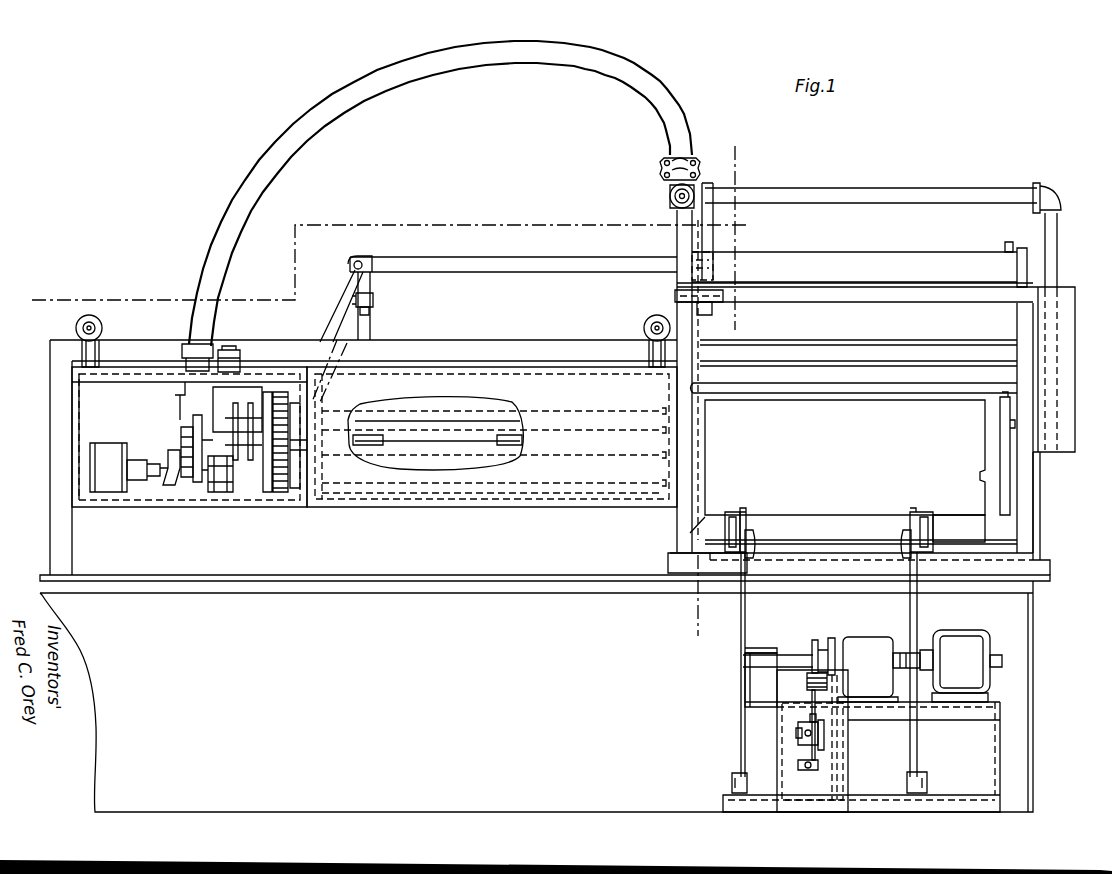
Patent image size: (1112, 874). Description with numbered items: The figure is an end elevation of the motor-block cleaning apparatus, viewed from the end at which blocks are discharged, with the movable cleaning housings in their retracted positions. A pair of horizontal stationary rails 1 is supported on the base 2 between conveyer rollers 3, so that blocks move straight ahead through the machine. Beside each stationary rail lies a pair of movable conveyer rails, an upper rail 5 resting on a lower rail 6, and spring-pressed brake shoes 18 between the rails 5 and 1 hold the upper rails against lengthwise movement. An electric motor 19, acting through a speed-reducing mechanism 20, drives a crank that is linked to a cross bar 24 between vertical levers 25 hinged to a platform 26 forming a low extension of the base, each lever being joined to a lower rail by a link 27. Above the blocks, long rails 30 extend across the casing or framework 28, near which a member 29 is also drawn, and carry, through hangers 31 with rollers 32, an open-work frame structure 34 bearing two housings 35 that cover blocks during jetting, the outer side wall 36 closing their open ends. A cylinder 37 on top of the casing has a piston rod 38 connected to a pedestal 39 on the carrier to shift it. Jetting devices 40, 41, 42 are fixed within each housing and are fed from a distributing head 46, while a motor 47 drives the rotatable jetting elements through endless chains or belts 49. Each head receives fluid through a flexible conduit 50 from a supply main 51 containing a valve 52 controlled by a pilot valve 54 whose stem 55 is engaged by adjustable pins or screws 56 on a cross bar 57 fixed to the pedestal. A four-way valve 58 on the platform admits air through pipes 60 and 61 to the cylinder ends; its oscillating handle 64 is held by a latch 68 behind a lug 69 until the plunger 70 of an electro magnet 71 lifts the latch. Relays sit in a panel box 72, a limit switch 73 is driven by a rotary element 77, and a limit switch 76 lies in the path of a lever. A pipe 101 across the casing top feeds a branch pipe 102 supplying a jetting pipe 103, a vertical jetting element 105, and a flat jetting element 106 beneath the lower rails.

The stationary rail 1 is at (690, 533).
The base 2 is at (545, 693).
The rollers 3 is at (40, 286).
The upper rail 5 is at (745, 520).
The lower rail 6 is at (743, 157).
The brake shoes 18 is at (731, 512).
The electric motor 19 is at (961, 666).
The speed-reducing mechanism 20 is at (879, 669).
The cross bar 24 is at (785, 655).
The levers 25 is at (737, 640).
The platform 26 is at (953, 799).
The link 27 is at (752, 546).
The casing or framework 28 is at (1017, 318).
The rail 29 is at (898, 283).
The rails 30 is at (472, 347).
The hangers 31 is at (100, 342).
The rollers 32 is at (92, 315).
The frame structure 34 is at (272, 508).
The housings 35 is at (561, 508).
The outer side wall 36 is at (1040, 482).
The cylinder 37 is at (826, 254).
The piston rod 38 is at (532, 258).
The pedestal 39 is at (338, 287).
The jetting device 40 is at (438, 466).
The jetting device 41 is at (373, 446).
The jetting device 42 is at (460, 487).
The distributing head 46 is at (234, 340).
The motor 47 is at (90, 456).
The endless chains or belts 49 is at (219, 492).
The flexible conduit 50 is at (407, 78).
The supply main 51 is at (668, 196).
The valve 52 is at (652, 176).
The pilot valve 54 is at (713, 309).
The stem 55 is at (675, 298).
The adjustable pins or screws 56 is at (375, 299).
The cross bar 57 is at (372, 305).
The four-way valve 58 is at (798, 740).
The pipe 60 is at (700, 241).
The pipe 61 is at (1008, 242).
The oscillating handle 64 is at (825, 745).
The latch 68 is at (796, 733).
The lug 69 is at (817, 730).
The plunger 70 is at (810, 716).
The electro magnet 71 is at (807, 683).
The panel box 72 is at (1075, 296).
The limit switch 73 is at (128, 476).
The limit switch 76 is at (752, 684).
The rotary element 77 is at (165, 482).
The pipe 101 is at (905, 188).
The branch pipe 102 is at (1058, 226).
The jetting pipe 103 is at (923, 391).
The vertical jetting element 105 is at (1006, 426).
The flat jetting element 106 is at (832, 543).